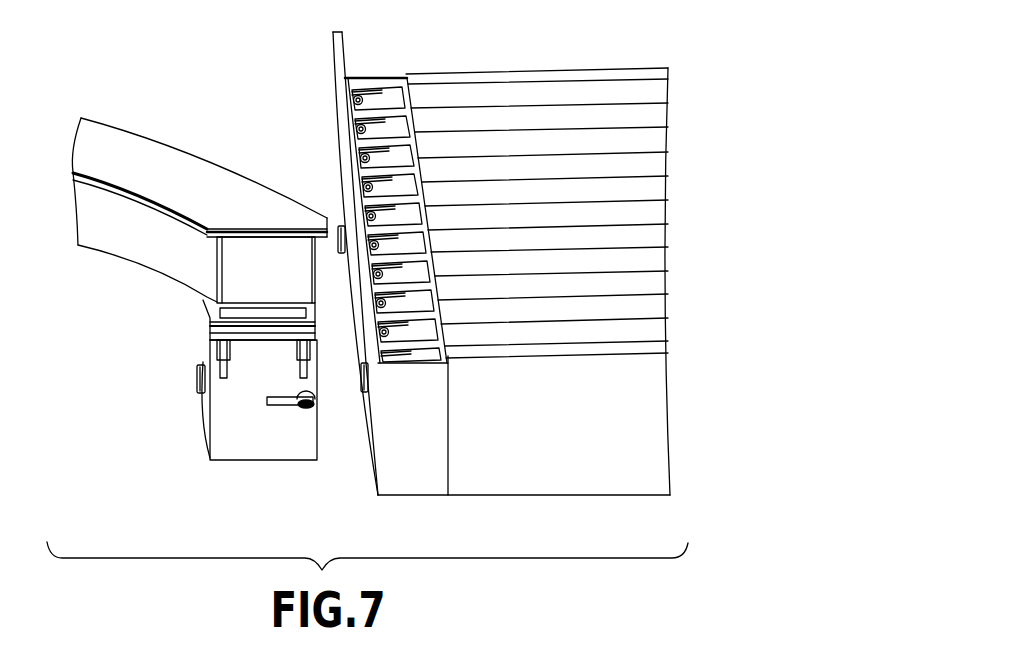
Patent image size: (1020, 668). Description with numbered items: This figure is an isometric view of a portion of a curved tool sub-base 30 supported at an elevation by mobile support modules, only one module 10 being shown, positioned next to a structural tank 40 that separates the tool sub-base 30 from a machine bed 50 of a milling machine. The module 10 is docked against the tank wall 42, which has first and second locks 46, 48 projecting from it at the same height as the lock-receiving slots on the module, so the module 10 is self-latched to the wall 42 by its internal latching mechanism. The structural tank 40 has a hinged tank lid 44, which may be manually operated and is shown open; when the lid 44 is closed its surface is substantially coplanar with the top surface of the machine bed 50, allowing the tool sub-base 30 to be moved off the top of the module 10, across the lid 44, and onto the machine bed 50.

The mobile support module 10 is at (207, 438).
The tool sub-base 30 is at (133, 264).
The structural tank 40 is at (403, 487).
The tank wall 42 is at (338, 181).
The tank lid 44 is at (331, 75).
The first lock 46 is at (360, 377).
The second lock 48 is at (338, 250).
The machine bed 50 is at (548, 72).